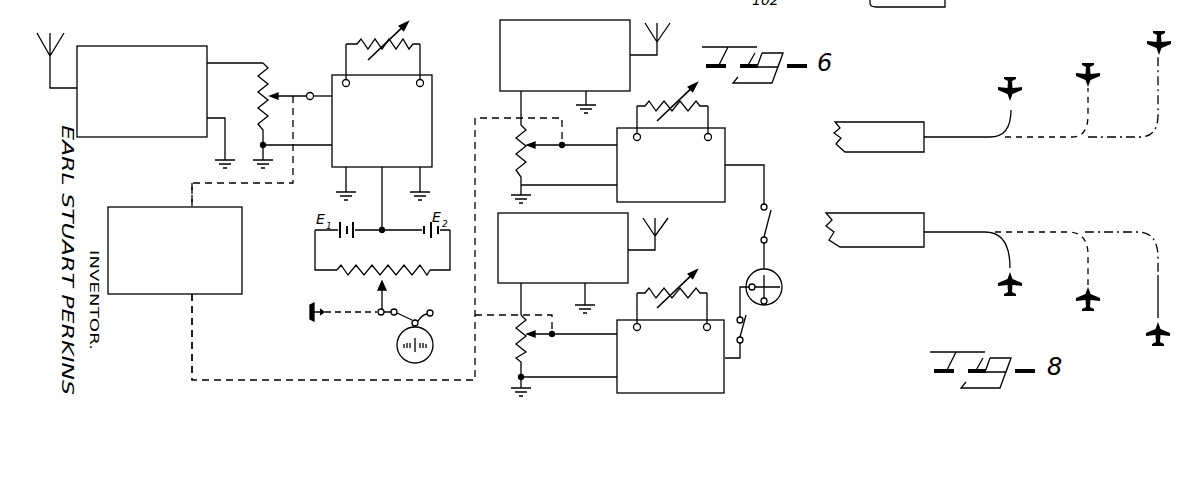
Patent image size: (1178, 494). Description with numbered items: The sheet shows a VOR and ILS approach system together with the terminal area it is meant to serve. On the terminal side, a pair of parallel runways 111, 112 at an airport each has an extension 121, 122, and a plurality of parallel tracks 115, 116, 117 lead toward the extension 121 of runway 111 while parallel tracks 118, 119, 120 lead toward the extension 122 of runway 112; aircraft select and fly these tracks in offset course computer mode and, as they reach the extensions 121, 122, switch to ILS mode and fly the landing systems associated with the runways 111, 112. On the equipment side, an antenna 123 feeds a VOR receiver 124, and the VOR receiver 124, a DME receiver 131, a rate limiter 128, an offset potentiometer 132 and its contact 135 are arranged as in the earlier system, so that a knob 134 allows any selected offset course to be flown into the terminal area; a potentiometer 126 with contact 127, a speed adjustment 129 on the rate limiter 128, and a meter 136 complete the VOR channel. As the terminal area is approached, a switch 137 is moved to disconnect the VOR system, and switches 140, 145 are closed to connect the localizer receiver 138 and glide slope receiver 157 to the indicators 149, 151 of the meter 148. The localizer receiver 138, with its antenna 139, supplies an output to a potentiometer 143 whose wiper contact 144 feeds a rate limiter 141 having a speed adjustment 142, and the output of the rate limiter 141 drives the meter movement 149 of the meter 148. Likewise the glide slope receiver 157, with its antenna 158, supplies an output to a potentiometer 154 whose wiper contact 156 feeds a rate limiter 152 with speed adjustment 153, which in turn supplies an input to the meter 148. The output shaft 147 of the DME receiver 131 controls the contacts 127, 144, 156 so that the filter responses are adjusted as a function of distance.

In FIG. 8, the runway 111 is at (882, 144).
In FIG. 8, the runway 112 is at (870, 225).
In FIG. 8, the parallel track 115 is at (1007, 108).
In FIG. 8, the parallel track 116 is at (1086, 105).
In FIG. 8, the parallel track 117 is at (1158, 84).
In FIG. 8, the parallel track 118 is at (1007, 267).
In FIG. 8, the parallel track 119 is at (1088, 272).
In FIG. 8, the parallel track 120 is at (1160, 276).
In FIG. 8, the runway extension 121 is at (1041, 143).
In FIG. 8, the runway extension 122 is at (1038, 232).
In FIG. 6, the antenna 123 is at (43, 68).
In FIG. 6, the VOR receiver 124 is at (105, 141).
In FIG. 6, the potentiometer 126 is at (258, 98).
In FIG. 6, the contact 127 is at (288, 90).
In FIG. 6, the rate limiter 128 is at (425, 99).
In FIG. 6, the variable resistor 129 is at (379, 37).
In FIG. 6, the DME receiver 131 is at (153, 297).
In FIG. 6, the offset potentiometer 132 is at (382, 269).
In FIG. 6, the knob 134 is at (312, 320).
In FIG. 6, the contact 135 is at (390, 302).
In FIG. 6, the meter 136 is at (397, 359).
In FIG. 6, the switch 137 is at (433, 315).
In FIG. 6, the localizer receiver 138 is at (615, 26).
In FIG. 6, the antenna 139 is at (670, 38).
In FIG. 6, the switch 140 is at (770, 219).
In FIG. 6, the rate limiter 141 is at (720, 153).
In FIG. 6, the speed adjustment 142 is at (666, 100).
In FIG. 6, the potentiometer 143 is at (512, 154).
In FIG. 6, the wiper contact 144 is at (556, 148).
In FIG. 6, the switch 145 is at (745, 325).
In FIG. 6, the output shaft 147 is at (192, 340).
In FIG. 6, the meter 148 is at (783, 282).
In FIG. 6, the meter movement 149 is at (768, 278).
In FIG. 6, the indicator 151 is at (782, 300).
In FIG. 6, the rate limiter 152 is at (715, 384).
In FIG. 6, the speed adjustment 153 is at (700, 288).
In FIG. 6, the potentiometer 154 is at (512, 338).
In FIG. 6, the wiper contact 156 is at (550, 337).
In FIG. 6, the glide slope receiver 157 is at (567, 223).
In FIG. 6, the antenna 158 is at (668, 237).